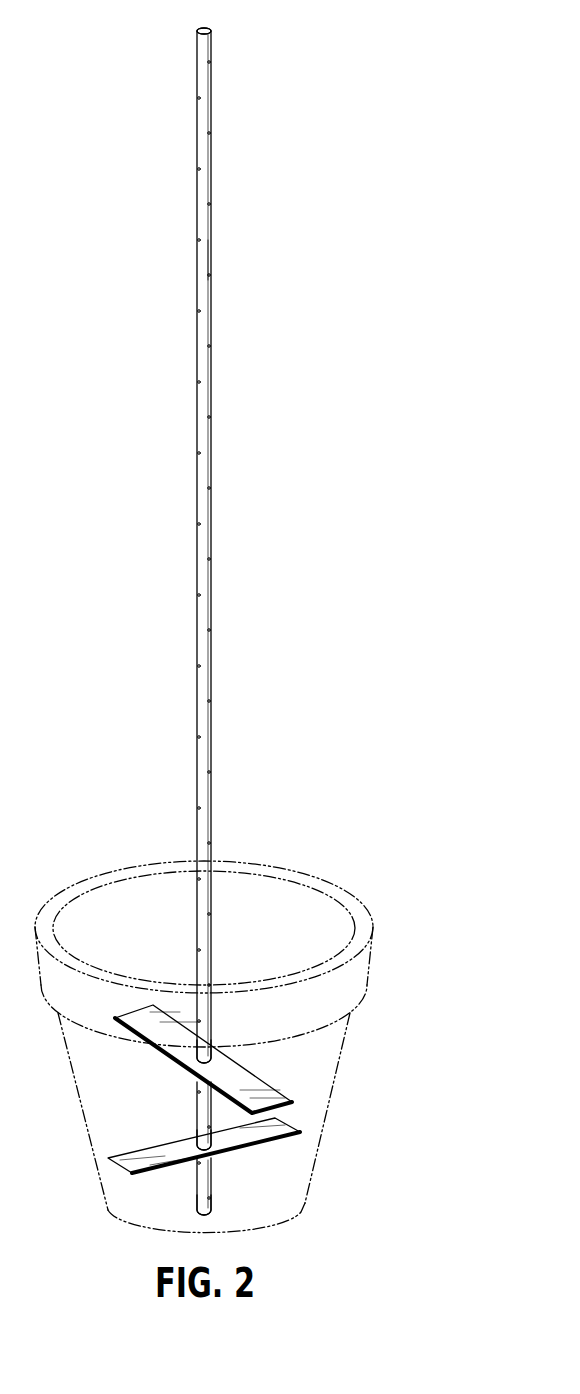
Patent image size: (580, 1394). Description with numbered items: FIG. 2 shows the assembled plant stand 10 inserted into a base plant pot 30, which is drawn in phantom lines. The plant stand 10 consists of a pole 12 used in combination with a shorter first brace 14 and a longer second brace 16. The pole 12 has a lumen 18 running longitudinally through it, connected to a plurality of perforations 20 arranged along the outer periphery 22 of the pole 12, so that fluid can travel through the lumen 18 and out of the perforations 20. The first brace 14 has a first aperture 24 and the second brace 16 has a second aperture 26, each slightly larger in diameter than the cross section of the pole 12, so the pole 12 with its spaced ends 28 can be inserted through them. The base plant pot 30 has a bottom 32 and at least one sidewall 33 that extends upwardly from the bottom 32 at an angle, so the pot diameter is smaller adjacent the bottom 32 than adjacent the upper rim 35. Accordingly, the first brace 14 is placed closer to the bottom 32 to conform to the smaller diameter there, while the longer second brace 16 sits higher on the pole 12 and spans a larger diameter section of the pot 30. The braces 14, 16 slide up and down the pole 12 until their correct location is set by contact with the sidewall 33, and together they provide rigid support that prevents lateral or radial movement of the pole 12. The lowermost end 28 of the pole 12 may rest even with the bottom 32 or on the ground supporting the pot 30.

The plant stand 10 is at (284, 791).
The pole 12 is at (214, 372).
The first brace 14 is at (153, 1159).
The second brace 16 is at (264, 1093).
The lumen 18 is at (199, 29).
The perforations 20 is at (211, 204).
The outer periphery 22 is at (206, 259).
The first aperture 24 is at (200, 1146).
The second aperture 26 is at (209, 1059).
The spaced ends 28 is at (210, 29).
The base plant pot 30 is at (325, 878).
The bottom 32 is at (299, 1226).
The sidewall 33 is at (71, 1070).
The upper rim 35 is at (118, 869).